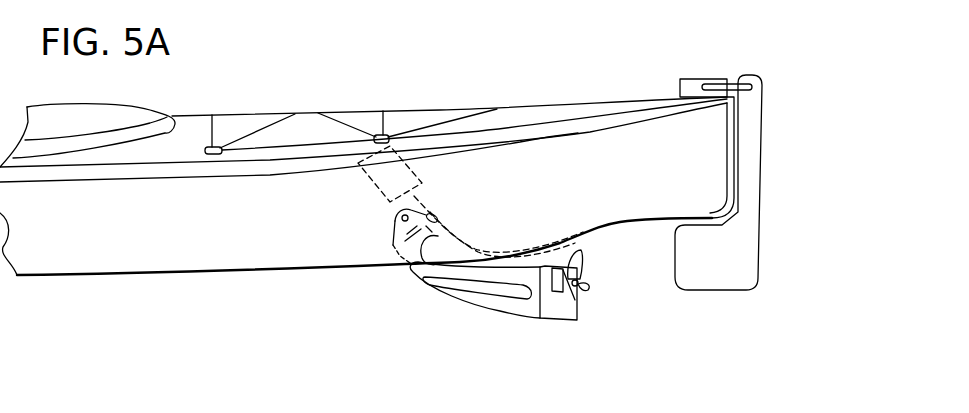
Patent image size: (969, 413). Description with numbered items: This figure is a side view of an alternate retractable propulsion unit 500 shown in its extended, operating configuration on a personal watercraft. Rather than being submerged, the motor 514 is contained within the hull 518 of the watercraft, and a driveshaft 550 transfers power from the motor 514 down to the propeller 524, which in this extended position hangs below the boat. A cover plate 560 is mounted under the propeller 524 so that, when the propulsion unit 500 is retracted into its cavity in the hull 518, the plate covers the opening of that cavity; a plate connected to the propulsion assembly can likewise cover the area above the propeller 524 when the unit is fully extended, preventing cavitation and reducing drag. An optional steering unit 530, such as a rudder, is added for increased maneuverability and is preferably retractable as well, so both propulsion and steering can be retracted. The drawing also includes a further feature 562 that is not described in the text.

The watercraft propulsion system 500 is at (322, 329).
The control unit housing 514 is at (388, 177).
The hull 518 is at (104, 243).
The propeller 524 is at (586, 283).
The mounting frame 530 is at (747, 120).
The cable conduit 550 is at (471, 243).
The motor housing 560 is at (558, 313).
The cable 562 is at (557, 238).